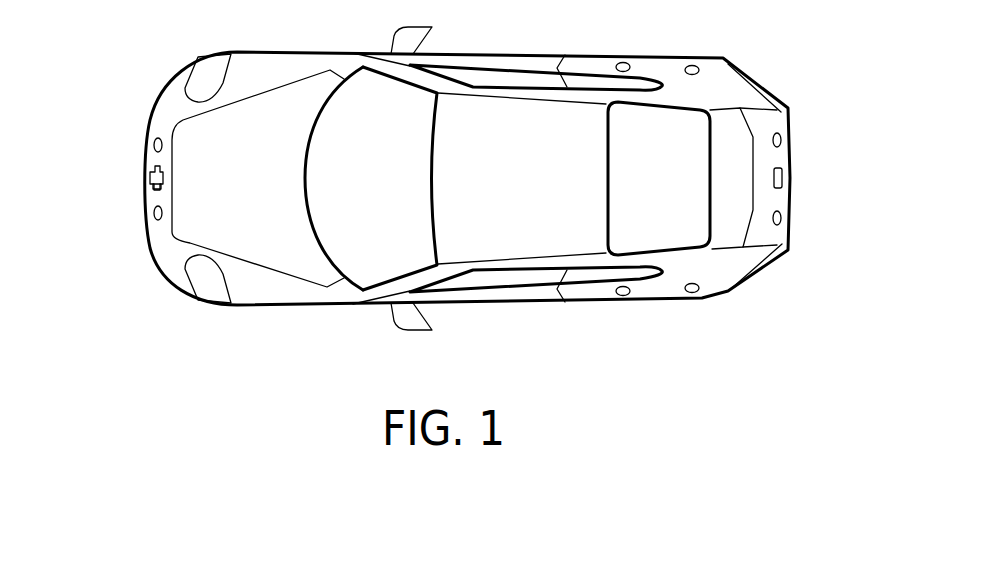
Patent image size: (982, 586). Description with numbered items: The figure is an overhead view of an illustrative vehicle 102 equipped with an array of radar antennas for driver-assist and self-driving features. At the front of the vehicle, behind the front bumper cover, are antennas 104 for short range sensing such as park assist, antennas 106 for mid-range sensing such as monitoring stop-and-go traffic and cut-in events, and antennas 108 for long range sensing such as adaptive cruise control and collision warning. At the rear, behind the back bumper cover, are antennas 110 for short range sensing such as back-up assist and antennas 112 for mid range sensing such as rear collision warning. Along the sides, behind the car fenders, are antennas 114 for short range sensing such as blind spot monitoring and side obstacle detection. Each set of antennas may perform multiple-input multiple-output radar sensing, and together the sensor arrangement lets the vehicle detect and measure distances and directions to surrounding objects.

The vehicle 102 is at (302, 307).
The antennas for short range sensing 104 is at (153, 146).
The antennas for mid-range sensing 106 is at (150, 185).
The antennas for long range sensing 108 is at (150, 175).
The antennas for short range sensing 110 is at (784, 139).
The antennas for mid range sensing 112 is at (784, 177).
The antennas for short range sensing 114 is at (627, 62).